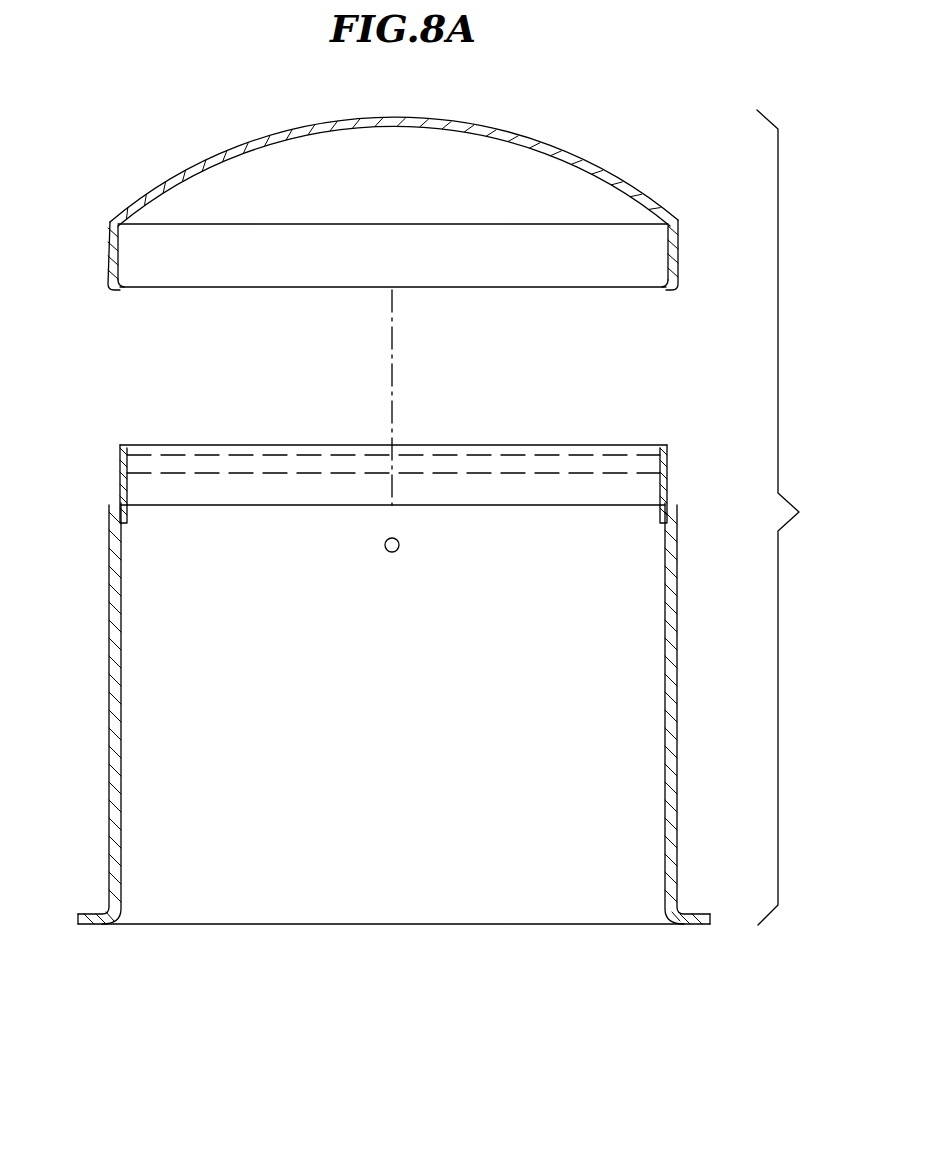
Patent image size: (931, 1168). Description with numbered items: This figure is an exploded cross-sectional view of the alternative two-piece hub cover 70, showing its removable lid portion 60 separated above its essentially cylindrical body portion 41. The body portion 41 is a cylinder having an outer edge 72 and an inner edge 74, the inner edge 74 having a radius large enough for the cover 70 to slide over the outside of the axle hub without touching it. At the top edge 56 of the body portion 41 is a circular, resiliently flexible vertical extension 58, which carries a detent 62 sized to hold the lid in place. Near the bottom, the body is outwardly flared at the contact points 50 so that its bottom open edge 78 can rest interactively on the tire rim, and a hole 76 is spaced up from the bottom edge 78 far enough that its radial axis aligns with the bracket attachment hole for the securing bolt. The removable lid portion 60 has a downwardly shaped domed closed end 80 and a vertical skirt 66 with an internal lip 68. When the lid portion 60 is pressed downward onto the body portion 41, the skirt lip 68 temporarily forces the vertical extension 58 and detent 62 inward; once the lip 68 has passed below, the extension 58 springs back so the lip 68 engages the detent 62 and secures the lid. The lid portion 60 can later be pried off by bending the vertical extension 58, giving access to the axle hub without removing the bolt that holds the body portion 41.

The body portion 41 is at (680, 725).
The outwardly flared contact points 50 is at (100, 913).
The top edge 56 is at (117, 498).
The vertical extension 58 is at (128, 492).
The removable lid portion 60 is at (165, 172).
The detent 62 is at (118, 465).
The vertical skirt 66 is at (108, 252).
The internal lip 68 is at (122, 277).
The alternative hub cover 70 is at (808, 409).
The outer edge 72 is at (707, 595).
The inner edge 74 is at (665, 648).
The hole 76 is at (399, 545).
The bottom open edge 78 is at (463, 925).
The domed closed end 80 is at (458, 123).